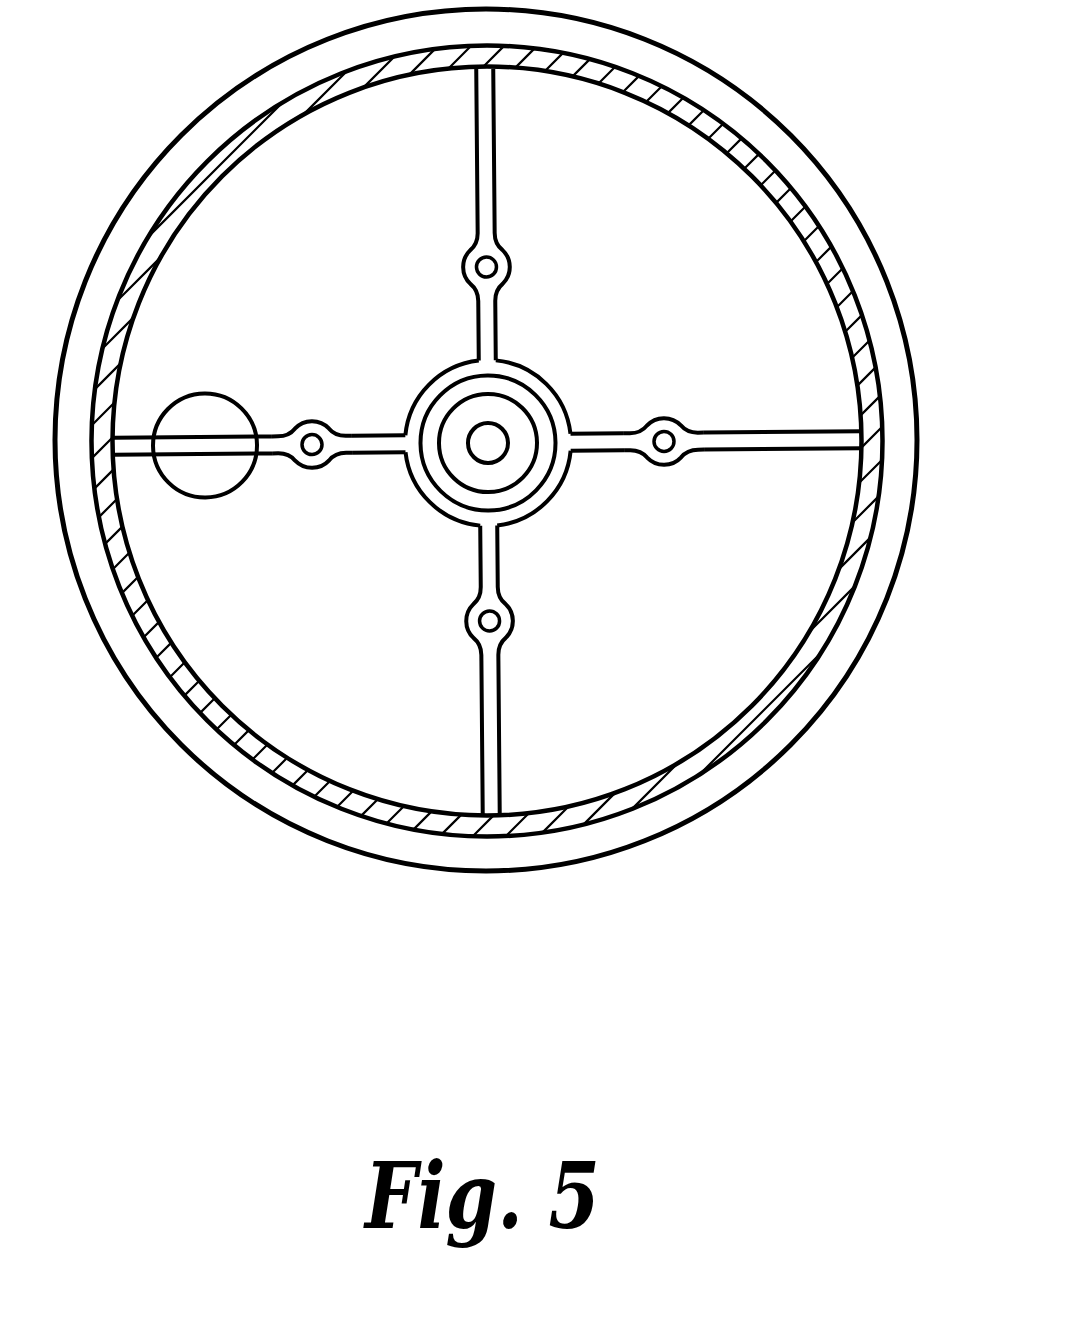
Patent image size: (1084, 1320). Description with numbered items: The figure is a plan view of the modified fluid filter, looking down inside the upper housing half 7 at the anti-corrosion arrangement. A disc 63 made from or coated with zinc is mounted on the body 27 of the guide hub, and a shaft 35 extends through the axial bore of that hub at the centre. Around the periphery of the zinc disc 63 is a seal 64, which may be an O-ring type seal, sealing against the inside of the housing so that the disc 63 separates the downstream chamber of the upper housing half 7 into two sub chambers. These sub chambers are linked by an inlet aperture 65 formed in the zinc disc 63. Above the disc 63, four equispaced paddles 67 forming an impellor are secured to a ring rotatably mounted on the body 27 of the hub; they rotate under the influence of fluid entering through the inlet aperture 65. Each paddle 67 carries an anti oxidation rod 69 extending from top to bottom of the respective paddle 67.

The upper housing half 7 is at (822, 160).
The seal 64 is at (315, 792).
The zinc disc 63 is at (345, 697).
The paddles 67 is at (497, 180).
The anti oxidation rod 69 is at (510, 268).
The inlet aperture 65 is at (238, 402).
The body of the hub 27 is at (537, 412).
The shaft 35 is at (468, 422).